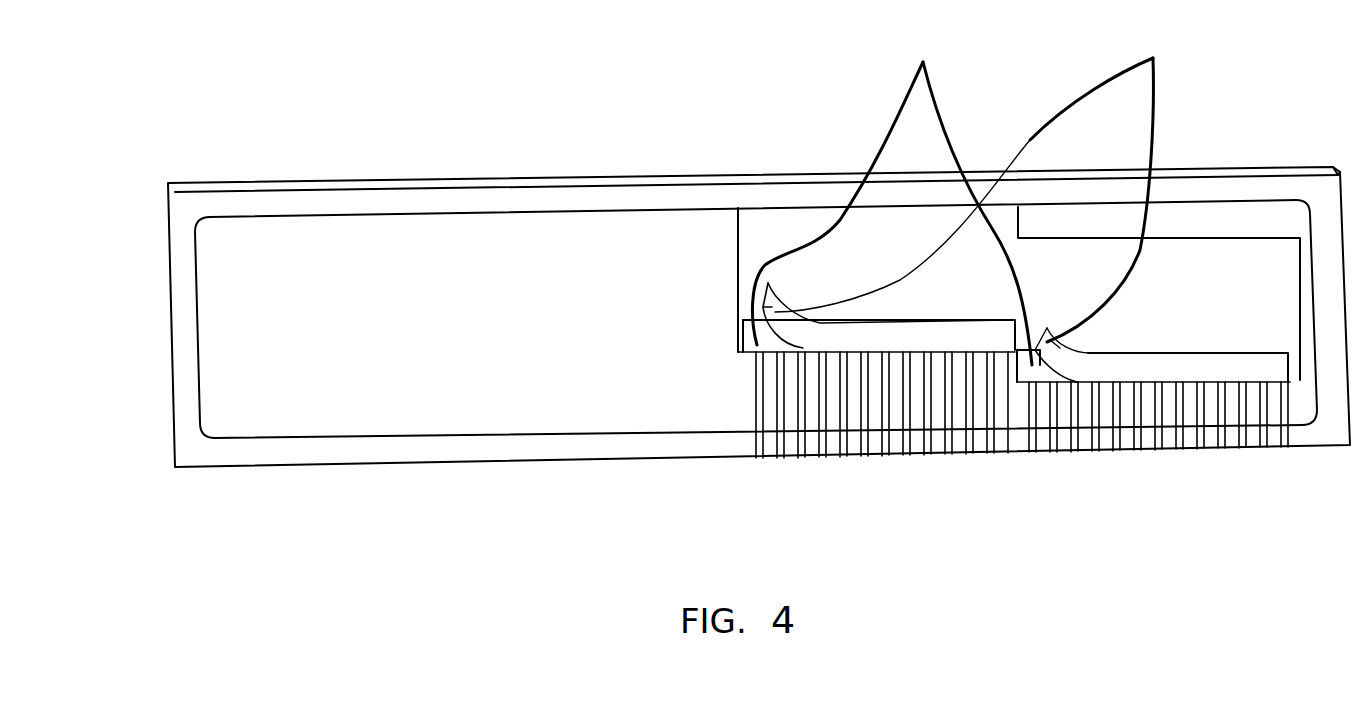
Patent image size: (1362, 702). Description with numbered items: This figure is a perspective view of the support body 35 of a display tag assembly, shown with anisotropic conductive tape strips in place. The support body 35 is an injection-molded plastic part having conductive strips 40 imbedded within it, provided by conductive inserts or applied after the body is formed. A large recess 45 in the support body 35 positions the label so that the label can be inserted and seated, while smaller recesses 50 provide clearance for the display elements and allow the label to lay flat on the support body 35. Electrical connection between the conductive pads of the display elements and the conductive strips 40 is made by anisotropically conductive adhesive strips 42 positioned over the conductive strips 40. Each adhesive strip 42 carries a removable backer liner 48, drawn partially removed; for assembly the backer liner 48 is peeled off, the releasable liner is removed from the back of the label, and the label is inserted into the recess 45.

The support body 35 is at (508, 178).
The conductive strips 40 is at (1167, 443).
The anisotropically conductive adhesive strips 42 is at (892, 187).
The recess 45 is at (438, 415).
The backer liner 48 is at (974, 195).
The recesses 50 is at (800, 232).